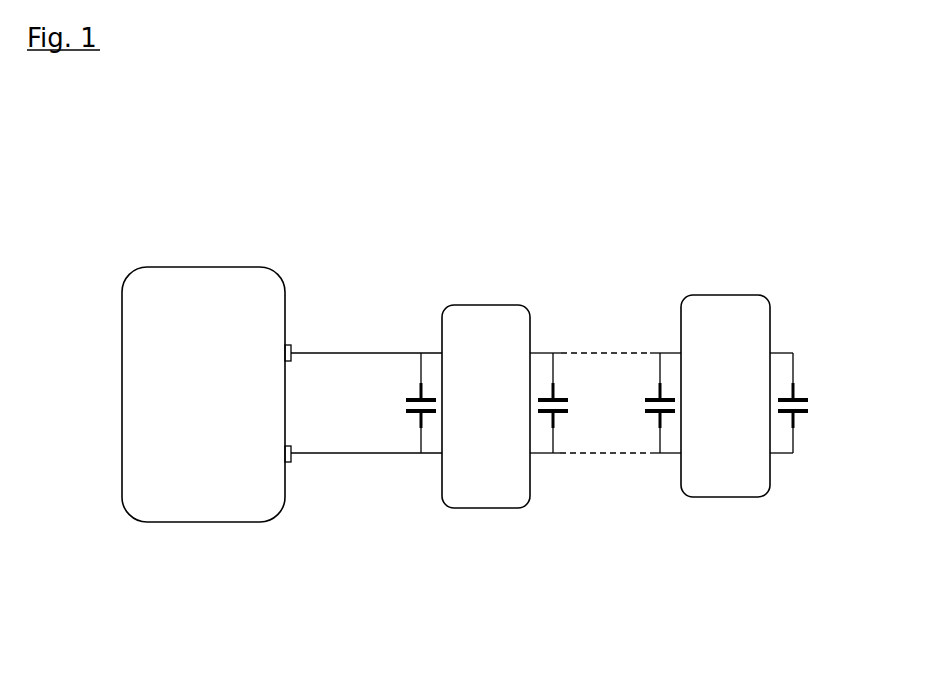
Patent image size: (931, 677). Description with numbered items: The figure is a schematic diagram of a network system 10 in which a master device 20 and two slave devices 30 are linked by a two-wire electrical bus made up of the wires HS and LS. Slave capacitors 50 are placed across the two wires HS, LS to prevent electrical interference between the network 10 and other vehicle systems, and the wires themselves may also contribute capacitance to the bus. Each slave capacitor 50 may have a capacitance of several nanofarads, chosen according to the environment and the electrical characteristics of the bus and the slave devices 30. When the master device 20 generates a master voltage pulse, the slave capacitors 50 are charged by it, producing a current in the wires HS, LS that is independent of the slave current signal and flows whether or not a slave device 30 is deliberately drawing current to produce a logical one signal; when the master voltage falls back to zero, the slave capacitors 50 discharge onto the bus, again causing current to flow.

The network system 10 is at (673, 186).
The master device 20 is at (257, 267).
The slave device 30 is at (488, 305).
The slave capacitor 50 is at (408, 436).